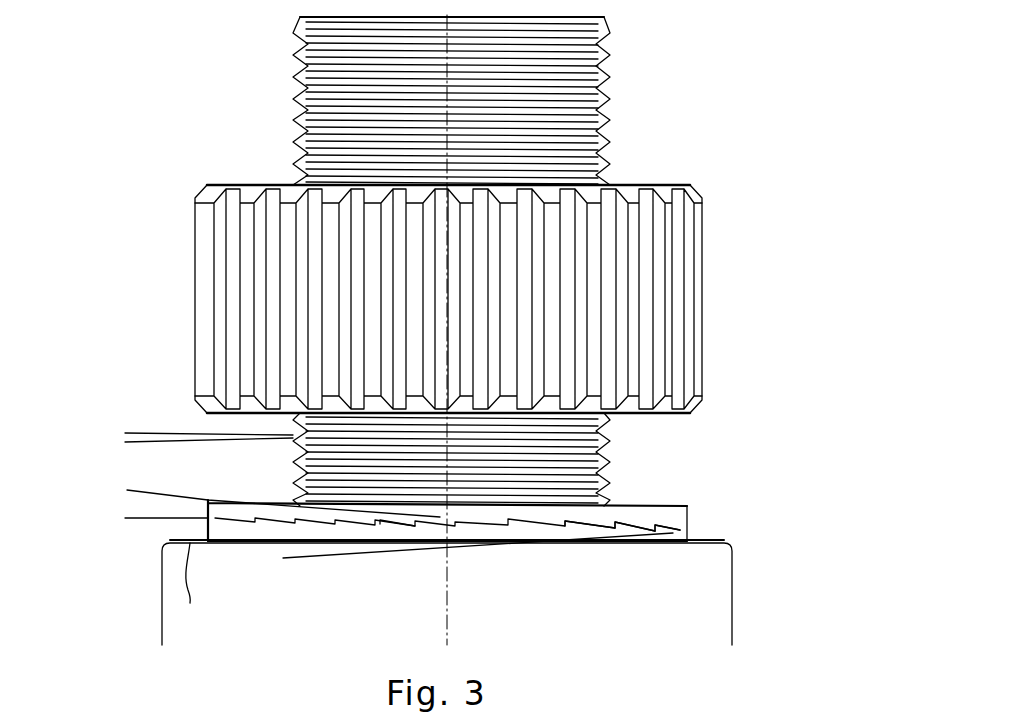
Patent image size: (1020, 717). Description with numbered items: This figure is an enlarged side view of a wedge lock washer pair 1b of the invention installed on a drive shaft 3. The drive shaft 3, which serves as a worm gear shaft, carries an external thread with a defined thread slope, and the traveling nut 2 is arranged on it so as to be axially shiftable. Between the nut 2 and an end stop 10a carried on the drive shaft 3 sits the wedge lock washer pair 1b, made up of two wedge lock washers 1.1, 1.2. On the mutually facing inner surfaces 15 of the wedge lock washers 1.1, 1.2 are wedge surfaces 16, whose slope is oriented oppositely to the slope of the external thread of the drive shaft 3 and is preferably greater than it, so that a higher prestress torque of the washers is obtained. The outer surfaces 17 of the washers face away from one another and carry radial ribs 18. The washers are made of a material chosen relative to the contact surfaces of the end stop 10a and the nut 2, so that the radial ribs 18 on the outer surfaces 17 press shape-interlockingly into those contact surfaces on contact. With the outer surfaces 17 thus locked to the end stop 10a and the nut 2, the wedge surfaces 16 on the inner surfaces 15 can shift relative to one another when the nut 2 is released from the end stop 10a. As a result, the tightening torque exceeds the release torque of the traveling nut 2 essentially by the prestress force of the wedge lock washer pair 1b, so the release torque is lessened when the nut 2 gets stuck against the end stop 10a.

The traveling nut 2 is at (673, 340).
The wedge lock washer pair 1b is at (757, 447).
The wedge lock washer 1.1 is at (673, 515).
The wedge lock washer 1.2 is at (673, 533).
The drive shaft 3 is at (672, 628).
The end stop 10a is at (190, 603).
The inner surfaces 15 is at (408, 528).
The wedge surfaces 16 is at (680, 517).
The outer surfaces 17 is at (620, 543).
The radial ribs 18 is at (570, 543).